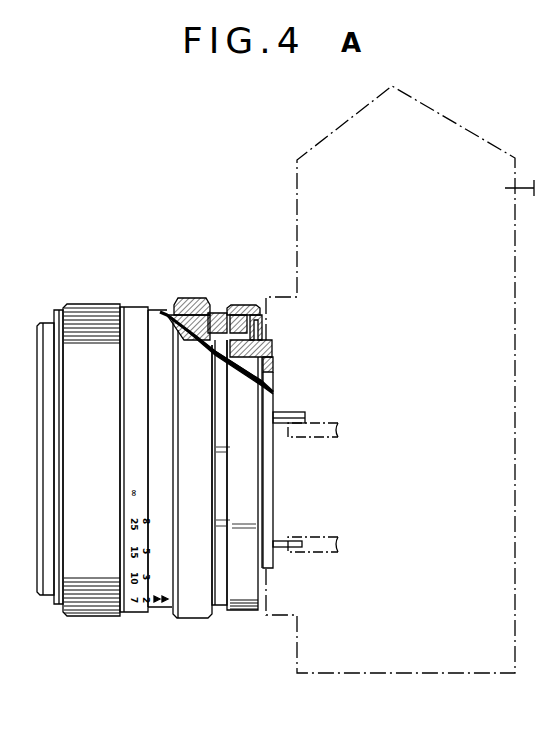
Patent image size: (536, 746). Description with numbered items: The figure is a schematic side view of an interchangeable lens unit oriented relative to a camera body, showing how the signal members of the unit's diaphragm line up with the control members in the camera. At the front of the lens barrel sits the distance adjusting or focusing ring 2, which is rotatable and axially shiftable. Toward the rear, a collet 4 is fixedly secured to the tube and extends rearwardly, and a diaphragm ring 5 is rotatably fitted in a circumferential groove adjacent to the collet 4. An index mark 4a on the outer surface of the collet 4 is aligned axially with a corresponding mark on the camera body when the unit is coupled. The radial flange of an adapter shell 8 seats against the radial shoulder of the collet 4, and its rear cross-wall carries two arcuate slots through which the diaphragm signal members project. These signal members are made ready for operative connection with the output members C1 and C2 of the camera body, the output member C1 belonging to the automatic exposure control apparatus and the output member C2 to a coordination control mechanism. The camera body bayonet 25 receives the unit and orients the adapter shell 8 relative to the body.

The focusing ring 2 is at (90, 304).
The diaphragm ring 5 is at (197, 298).
The collet 4 is at (221, 313).
The index mark 4a is at (245, 305).
The camera body bayonet 25 is at (282, 297).
The adapter shell 8 is at (238, 358).
The output member C1 is at (340, 430).
The output member C2 is at (340, 546).